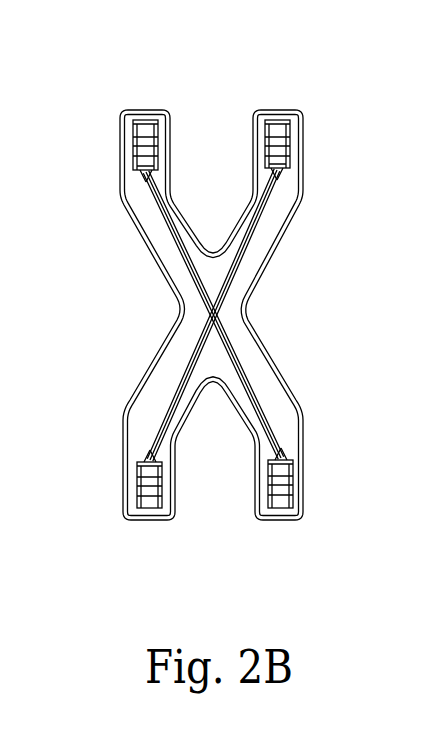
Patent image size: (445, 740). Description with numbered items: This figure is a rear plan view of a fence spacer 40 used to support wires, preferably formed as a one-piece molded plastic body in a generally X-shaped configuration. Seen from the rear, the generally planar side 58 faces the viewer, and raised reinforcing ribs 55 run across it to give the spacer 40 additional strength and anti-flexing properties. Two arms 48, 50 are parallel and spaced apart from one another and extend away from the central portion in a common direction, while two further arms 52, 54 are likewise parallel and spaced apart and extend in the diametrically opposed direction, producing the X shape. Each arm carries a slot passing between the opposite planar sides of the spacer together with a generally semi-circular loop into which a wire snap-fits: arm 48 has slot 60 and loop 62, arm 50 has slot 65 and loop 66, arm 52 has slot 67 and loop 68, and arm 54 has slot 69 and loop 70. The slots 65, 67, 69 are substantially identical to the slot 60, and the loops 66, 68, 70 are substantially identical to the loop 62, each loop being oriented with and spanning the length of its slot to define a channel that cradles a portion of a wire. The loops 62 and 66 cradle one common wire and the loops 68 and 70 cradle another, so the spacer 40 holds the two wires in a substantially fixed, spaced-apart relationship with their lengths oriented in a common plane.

The spacer 40 is at (337, 171).
The arm 48 is at (283, 243).
The arm 50 is at (138, 229).
The arm 52 is at (303, 423).
The arm 54 is at (140, 401).
The raised reinforcing ribs 55 is at (177, 328).
The side 58 is at (225, 275).
The slot 60 is at (290, 130).
The loop 62 is at (275, 134).
The slot 65 is at (158, 132).
The loop 66 is at (145, 131).
The slot 67 is at (293, 486).
The loop 68 is at (281, 498).
The slot 69 is at (138, 486).
The loop 70 is at (150, 497).